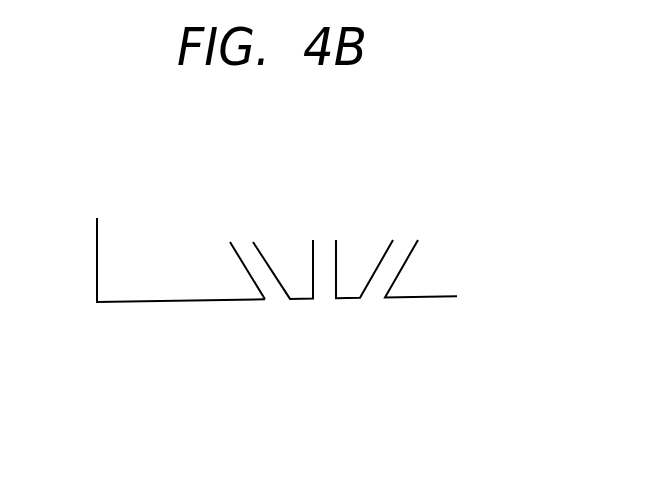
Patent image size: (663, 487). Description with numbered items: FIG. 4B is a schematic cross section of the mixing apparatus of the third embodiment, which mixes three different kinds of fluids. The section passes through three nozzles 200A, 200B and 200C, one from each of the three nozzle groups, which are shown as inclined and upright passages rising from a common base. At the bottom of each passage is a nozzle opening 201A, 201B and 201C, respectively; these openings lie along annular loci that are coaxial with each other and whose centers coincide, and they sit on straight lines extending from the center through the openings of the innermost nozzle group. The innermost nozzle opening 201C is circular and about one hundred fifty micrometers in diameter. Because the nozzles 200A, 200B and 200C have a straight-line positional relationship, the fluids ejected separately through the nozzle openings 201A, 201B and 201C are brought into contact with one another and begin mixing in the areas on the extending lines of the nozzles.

The nozzle 200A is at (398, 250).
The nozzle 200B is at (323, 248).
The nozzle 200C is at (245, 248).
The nozzle opening 201A is at (372, 297).
The nozzle opening 201B is at (322, 297).
The nozzle opening 201C is at (273, 297).